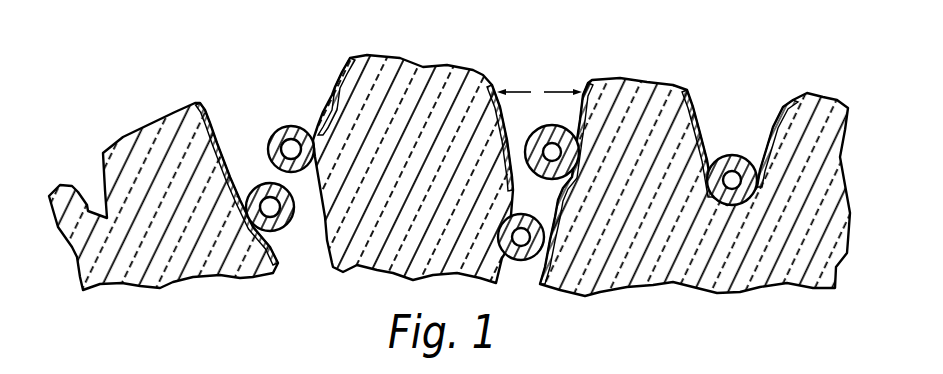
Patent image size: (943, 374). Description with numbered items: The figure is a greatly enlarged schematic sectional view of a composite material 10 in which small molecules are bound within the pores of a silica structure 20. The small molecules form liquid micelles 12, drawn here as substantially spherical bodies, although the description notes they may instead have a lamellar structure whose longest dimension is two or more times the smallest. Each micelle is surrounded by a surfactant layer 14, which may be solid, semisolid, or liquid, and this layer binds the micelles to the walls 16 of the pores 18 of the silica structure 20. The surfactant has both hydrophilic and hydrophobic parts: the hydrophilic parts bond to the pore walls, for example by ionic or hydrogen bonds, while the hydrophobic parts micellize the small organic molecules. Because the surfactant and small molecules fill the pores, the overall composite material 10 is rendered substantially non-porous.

The composite material 10 is at (145, 78).
The liquid micelles 12 is at (287, 135).
The surfactant layer 14 is at (318, 100).
The walls 16 is at (213, 122).
The pores 18 is at (526, 120).
The silica structure 20 is at (158, 152).